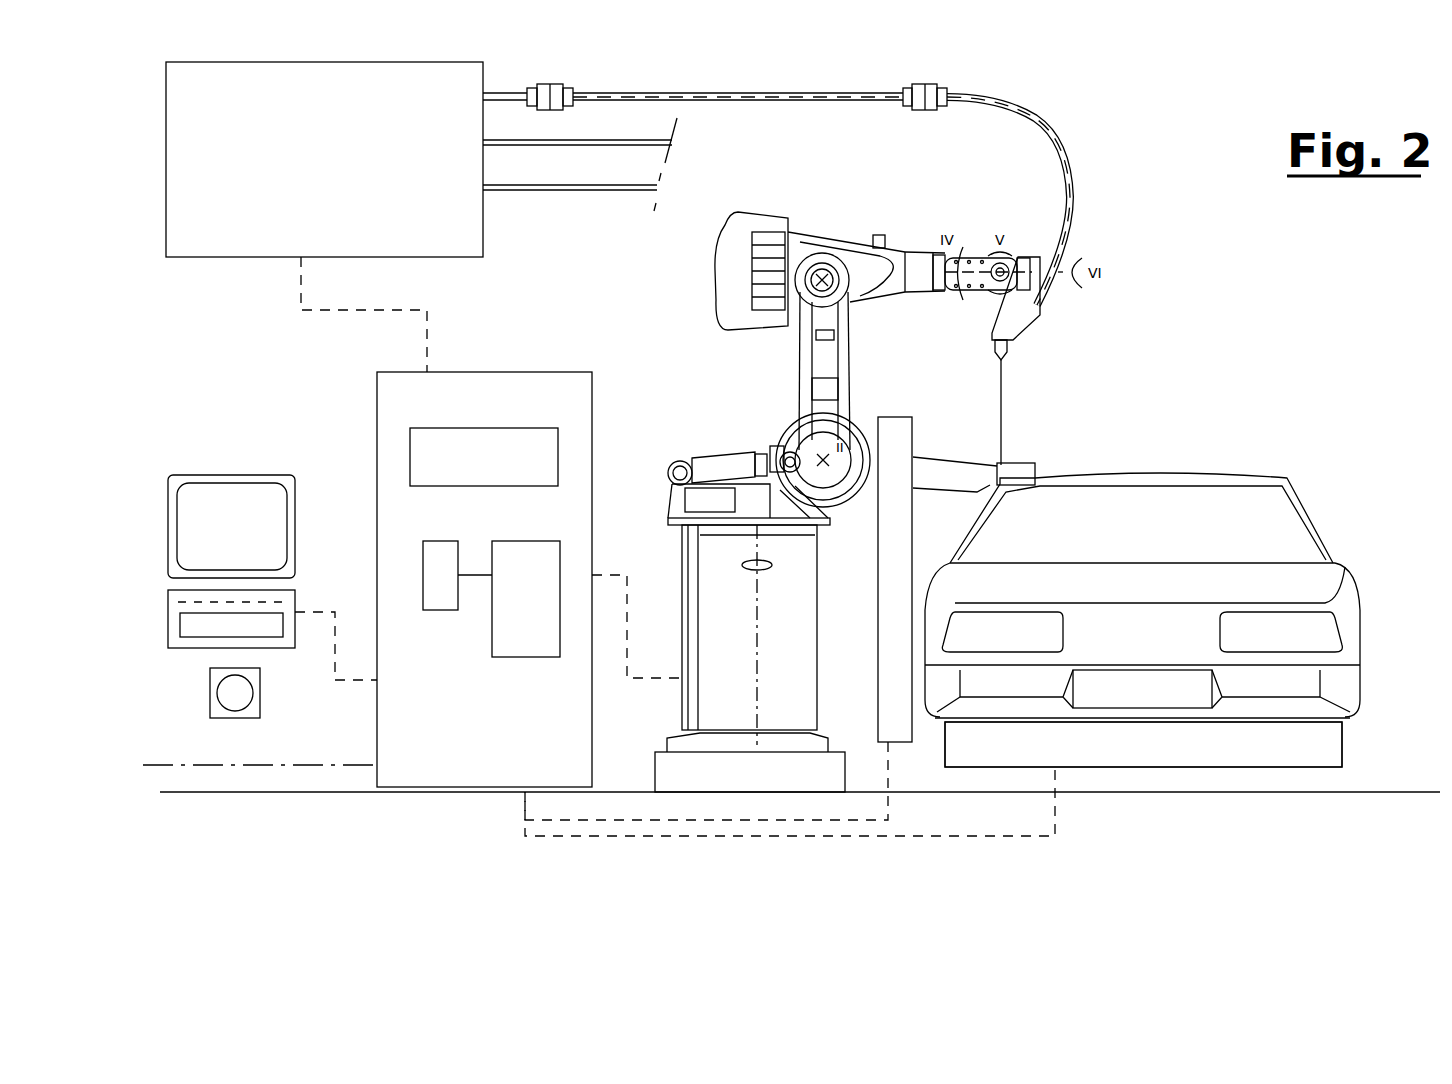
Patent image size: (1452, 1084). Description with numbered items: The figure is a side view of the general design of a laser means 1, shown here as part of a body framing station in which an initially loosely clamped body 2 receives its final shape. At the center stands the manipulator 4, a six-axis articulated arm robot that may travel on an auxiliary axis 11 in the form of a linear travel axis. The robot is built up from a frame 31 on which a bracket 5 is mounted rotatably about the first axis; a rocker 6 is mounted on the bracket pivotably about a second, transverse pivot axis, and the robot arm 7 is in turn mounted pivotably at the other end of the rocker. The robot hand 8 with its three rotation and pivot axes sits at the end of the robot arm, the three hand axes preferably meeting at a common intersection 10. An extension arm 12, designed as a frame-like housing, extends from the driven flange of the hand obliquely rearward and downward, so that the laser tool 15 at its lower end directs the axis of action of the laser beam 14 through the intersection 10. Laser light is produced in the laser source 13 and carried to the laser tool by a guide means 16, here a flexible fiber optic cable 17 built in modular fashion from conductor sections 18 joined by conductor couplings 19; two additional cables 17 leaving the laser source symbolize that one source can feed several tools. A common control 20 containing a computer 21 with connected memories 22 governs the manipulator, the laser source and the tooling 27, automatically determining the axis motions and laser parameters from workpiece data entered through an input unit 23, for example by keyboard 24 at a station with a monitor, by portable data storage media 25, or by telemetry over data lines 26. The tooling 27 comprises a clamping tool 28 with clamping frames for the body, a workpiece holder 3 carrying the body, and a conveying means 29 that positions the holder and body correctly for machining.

The laser means 1 is at (1154, 355).
The body 2 is at (1260, 517).
The workpiece holder 3 is at (1323, 743).
The conveying means 29 is at (1143, 744).
The manipulator 4 is at (677, 462).
The bracket 5 is at (690, 505).
The rocker 6 is at (805, 388).
The robot arm 7 is at (902, 267).
The robot hand 8 is at (1020, 258).
The intersection 10 is at (977, 260).
The auxiliary axis 11 is at (726, 749).
The extension arm 12 is at (1025, 318).
The laser source 13 is at (218, 220).
The laser beam 14 is at (1002, 405).
The laser tool 15 is at (993, 345).
The guide means 16 is at (1078, 129).
The fiber optic cable 17 is at (580, 185).
The conductor sections 18 is at (788, 93).
The conductor couplings 19 is at (565, 83).
The common control 20 is at (418, 399).
The computer 21 is at (521, 609).
The memories 22 is at (442, 592).
The input unit 23 is at (206, 442).
The keyboard 24 is at (273, 630).
The data storage media 25 is at (236, 695).
The data lines 26 is at (362, 765).
The tooling 27 is at (920, 445).
The clamping tool 28 is at (1036, 466).
The frame 31 is at (785, 620).